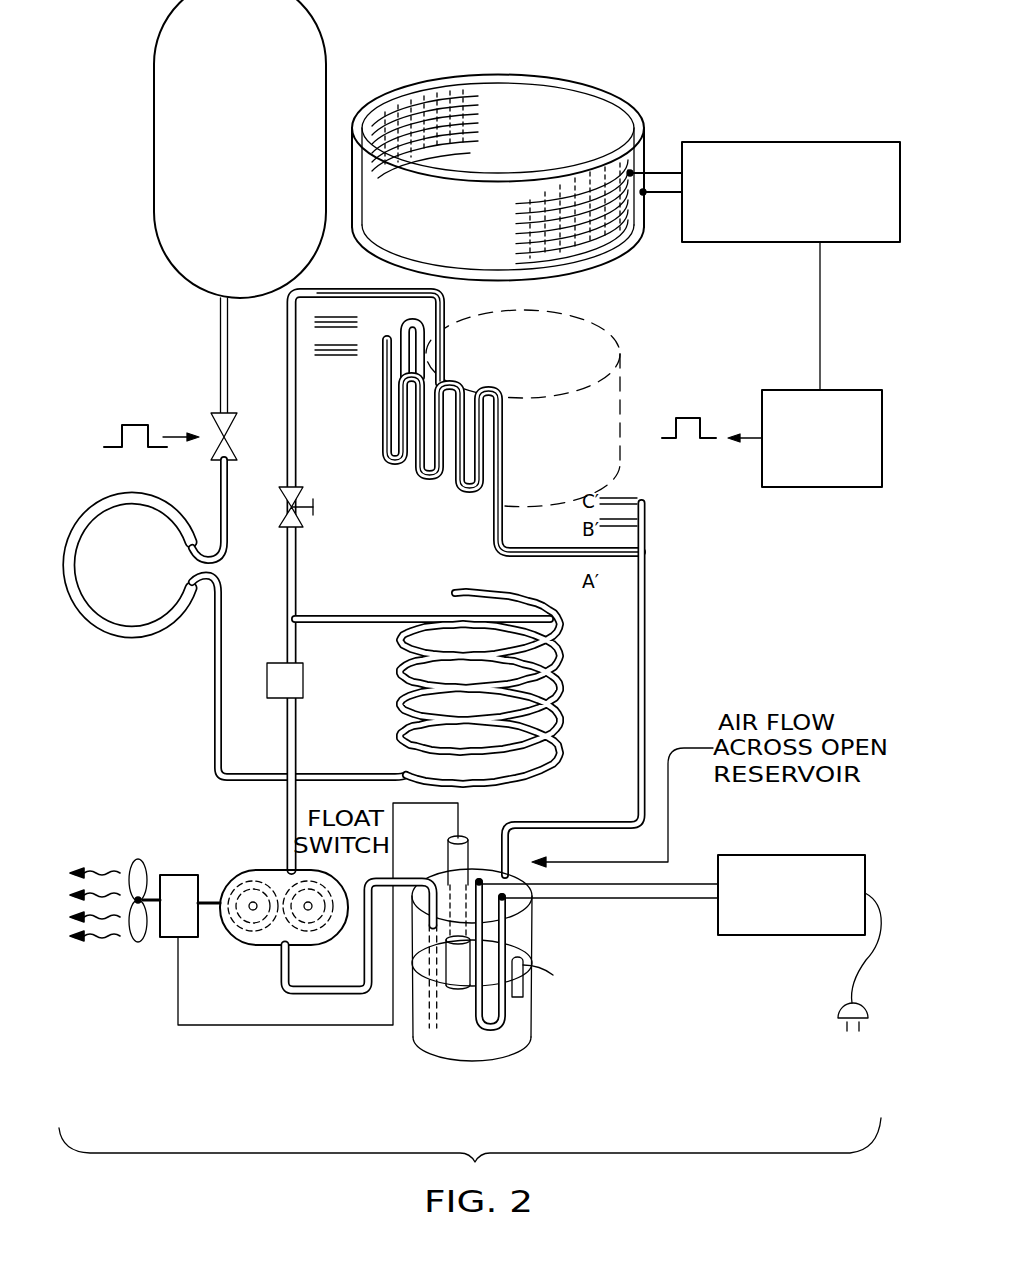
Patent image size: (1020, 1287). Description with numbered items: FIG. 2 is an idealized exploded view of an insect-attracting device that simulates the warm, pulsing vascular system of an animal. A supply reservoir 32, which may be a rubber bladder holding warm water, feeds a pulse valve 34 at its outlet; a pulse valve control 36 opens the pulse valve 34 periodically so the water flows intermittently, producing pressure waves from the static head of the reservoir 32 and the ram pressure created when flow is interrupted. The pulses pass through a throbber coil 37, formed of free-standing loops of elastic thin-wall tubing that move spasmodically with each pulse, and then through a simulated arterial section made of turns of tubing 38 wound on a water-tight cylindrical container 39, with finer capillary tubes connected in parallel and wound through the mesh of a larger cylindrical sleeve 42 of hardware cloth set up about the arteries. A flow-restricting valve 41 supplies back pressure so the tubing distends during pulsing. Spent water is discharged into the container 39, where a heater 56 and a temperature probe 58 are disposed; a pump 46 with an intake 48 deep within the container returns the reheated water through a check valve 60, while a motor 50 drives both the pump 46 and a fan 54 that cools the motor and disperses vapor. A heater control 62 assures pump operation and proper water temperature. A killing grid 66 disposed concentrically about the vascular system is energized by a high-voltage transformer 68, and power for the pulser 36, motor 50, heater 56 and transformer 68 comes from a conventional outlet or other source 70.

The supply reservoir 32 is at (250, 181).
The pulse valve 34 is at (236, 430).
The pulse valve control 36 is at (832, 470).
The throbber coil 37 is at (96, 624).
The turns of tubing 38 is at (556, 632).
The cylindrical container 39 is at (480, 1057).
The flow-restricting valve 41 is at (305, 496).
The cylindrical sleeve 42 is at (618, 400).
The pump 46 is at (232, 937).
The intake 48 is at (418, 1023).
The motor 50 is at (190, 873).
The fan 54 is at (135, 950).
The heater 56 is at (493, 1030).
The temperature probe 58 is at (523, 990).
The check valve 60 is at (303, 692).
The heater control 62 is at (790, 855).
The killing grid 66 is at (645, 128).
The high-voltage transformer 68 is at (804, 233).
The source 70 is at (840, 1021).